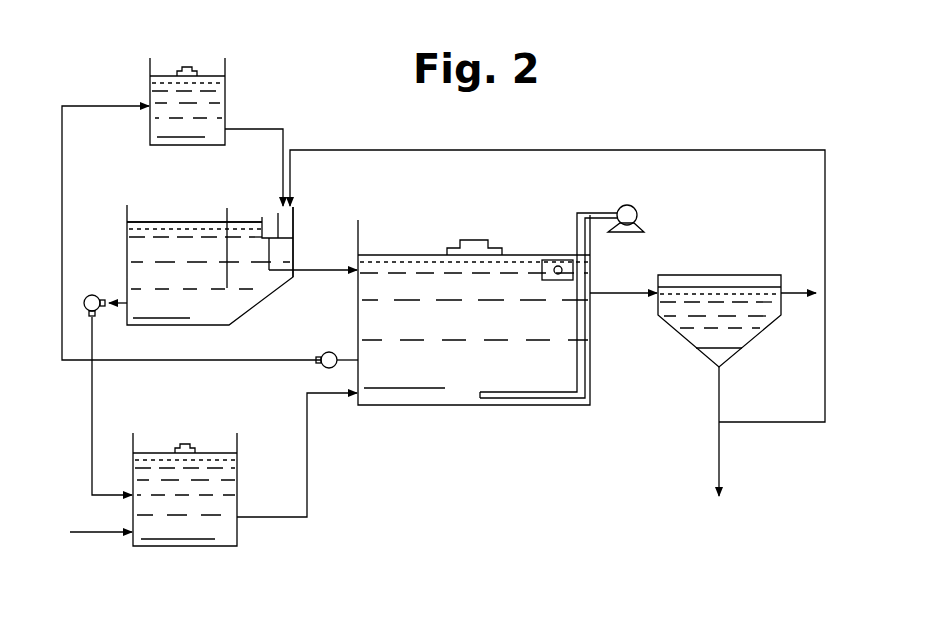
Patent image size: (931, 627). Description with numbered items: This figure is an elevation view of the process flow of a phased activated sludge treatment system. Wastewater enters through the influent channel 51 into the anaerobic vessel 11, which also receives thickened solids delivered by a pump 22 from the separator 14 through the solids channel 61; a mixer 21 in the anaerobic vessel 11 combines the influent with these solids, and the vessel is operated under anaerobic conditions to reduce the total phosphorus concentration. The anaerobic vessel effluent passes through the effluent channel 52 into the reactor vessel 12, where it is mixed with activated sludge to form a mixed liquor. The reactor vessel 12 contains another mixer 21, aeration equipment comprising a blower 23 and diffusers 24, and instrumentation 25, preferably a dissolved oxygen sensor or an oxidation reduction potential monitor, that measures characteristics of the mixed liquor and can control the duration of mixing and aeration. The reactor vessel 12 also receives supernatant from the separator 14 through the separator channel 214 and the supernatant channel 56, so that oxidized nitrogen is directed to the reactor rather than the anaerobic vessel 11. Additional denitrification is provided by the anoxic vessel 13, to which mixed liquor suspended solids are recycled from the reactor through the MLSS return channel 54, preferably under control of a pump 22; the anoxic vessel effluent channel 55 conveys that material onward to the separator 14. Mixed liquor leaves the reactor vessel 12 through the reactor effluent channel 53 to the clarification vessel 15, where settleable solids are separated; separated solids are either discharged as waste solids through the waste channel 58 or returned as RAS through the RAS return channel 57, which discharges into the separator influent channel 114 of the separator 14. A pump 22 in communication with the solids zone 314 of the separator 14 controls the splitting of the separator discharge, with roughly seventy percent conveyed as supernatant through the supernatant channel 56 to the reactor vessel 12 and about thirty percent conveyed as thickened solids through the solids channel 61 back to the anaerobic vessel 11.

The anaerobic vessel 11 is at (212, 548).
The reactor vessel 12 is at (556, 406).
The anoxic vessel 13 is at (160, 146).
The separator 14 is at (205, 326).
The clarification vessel 15 is at (690, 350).
The mixer 21 is at (188, 65).
The pump 22 is at (97, 295).
The blower 23 is at (637, 216).
The diffusers 24 is at (490, 399).
The instrumentation 25 is at (560, 259).
The influent channel 51 is at (105, 533).
The effluent channel 52 is at (273, 518).
The reactor effluent channel 53 is at (624, 294).
The MLSS return channel 54 is at (790, 292).
The anoxic vessel effluent channel 55 is at (250, 129).
The supernatant channel 56 is at (310, 266).
The RAS return channel 57 is at (688, 149).
The waste channel 58 is at (718, 458).
The solids channel 61 is at (92, 441).
The separator influent channel 114 is at (292, 224).
The separator channel 214 is at (270, 222).
The solids zone 314 is at (131, 246).